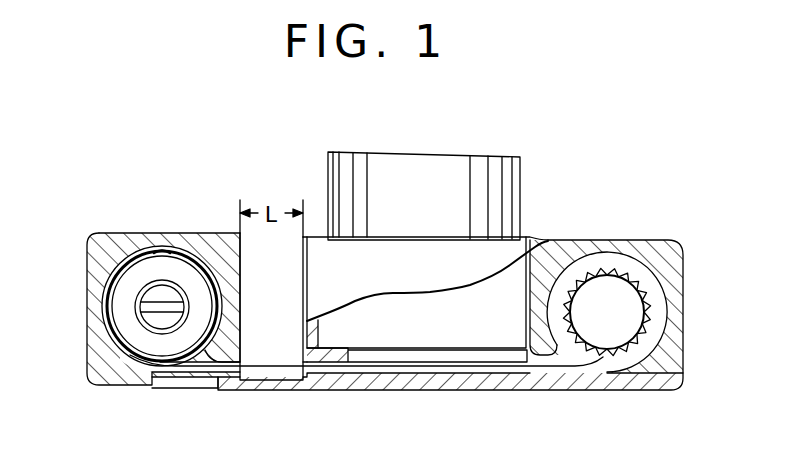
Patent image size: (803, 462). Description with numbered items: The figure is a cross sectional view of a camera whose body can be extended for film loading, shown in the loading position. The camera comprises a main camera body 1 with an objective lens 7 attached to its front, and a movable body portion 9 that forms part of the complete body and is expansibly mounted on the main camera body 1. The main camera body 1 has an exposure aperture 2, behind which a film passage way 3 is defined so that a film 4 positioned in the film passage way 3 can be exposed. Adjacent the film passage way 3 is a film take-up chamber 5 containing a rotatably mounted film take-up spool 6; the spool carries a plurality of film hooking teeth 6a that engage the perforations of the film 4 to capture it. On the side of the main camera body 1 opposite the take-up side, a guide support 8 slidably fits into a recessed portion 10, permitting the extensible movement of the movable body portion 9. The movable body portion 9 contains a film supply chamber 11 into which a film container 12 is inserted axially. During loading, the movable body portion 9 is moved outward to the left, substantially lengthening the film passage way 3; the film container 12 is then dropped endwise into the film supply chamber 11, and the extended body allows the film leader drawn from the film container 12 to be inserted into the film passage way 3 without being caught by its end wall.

The main camera body 1 is at (539, 240).
The exposure aperture 2 is at (462, 350).
The film passage way 3 is at (408, 364).
The film 4 is at (497, 365).
The film take-up chamber 5 is at (655, 322).
The film take-up spool 6 is at (613, 290).
The film hooking teeth 6a is at (650, 300).
The objective lens 7 is at (378, 155).
The guide support 8 is at (276, 383).
The movable body portion 9 is at (87, 291).
The recessed portion 10 is at (176, 385).
The film supply chamber 11 is at (162, 253).
The film container 12 is at (133, 272).